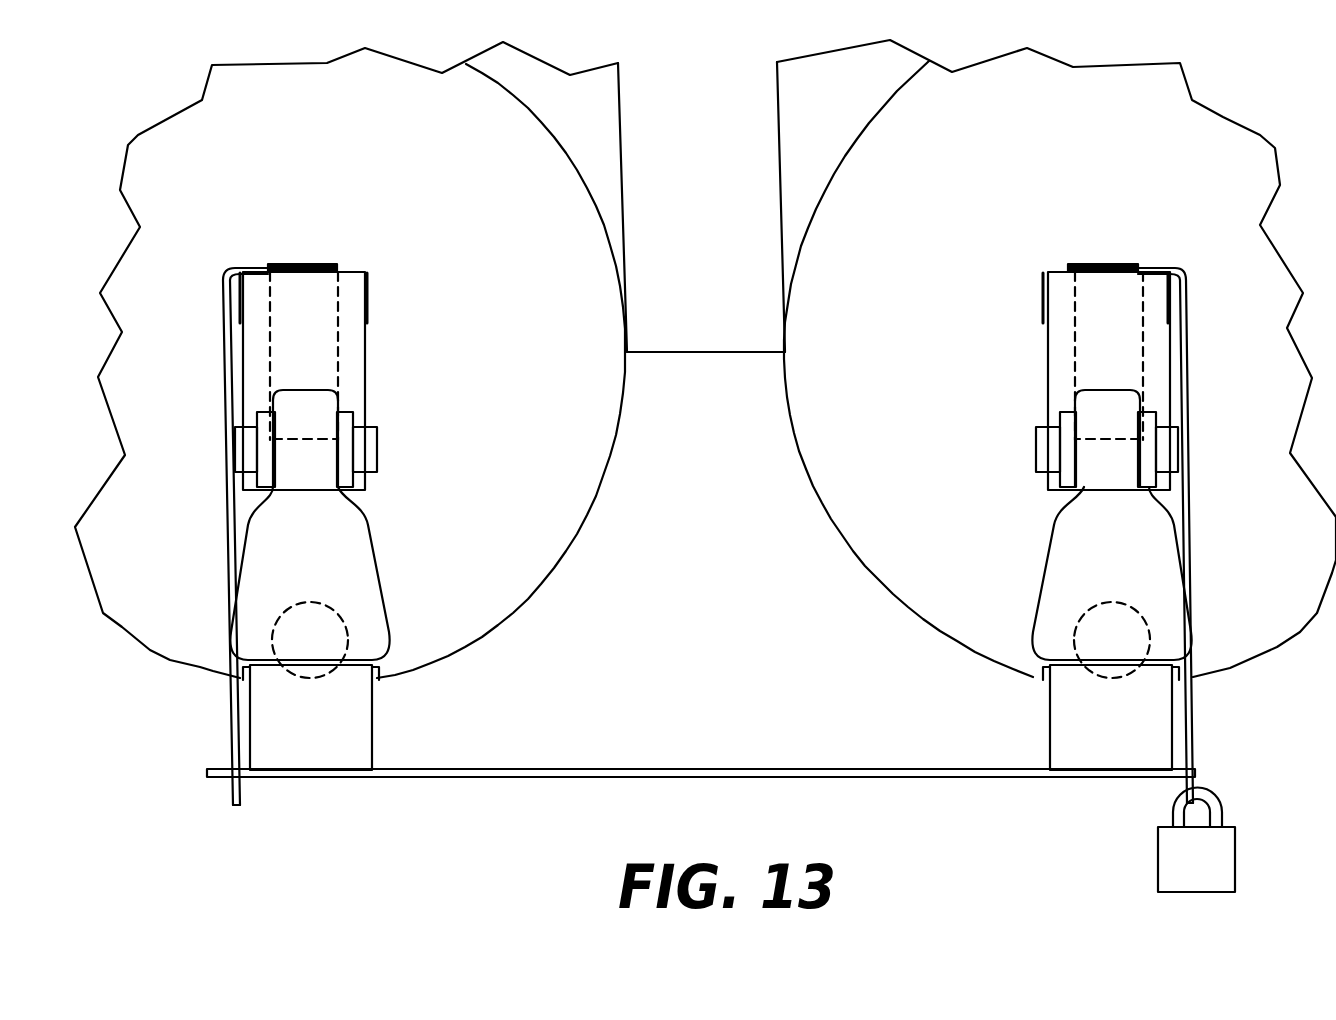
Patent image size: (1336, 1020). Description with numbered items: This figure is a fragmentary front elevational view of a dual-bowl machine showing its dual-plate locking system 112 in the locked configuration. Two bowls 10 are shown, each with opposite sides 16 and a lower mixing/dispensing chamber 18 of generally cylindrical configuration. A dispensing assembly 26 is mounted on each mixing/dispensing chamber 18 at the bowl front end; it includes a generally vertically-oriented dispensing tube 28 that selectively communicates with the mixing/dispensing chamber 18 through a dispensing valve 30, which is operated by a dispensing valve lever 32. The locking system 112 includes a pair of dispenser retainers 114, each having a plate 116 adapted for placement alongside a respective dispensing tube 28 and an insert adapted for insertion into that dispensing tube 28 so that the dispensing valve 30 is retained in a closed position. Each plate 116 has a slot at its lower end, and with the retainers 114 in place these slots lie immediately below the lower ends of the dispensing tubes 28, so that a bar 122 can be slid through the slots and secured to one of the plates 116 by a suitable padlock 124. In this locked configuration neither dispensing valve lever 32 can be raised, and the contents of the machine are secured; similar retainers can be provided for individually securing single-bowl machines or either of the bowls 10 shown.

The bowl 10 is at (238, 200).
The side 16 is at (778, 96).
The mixing/dispensing chamber 18 is at (503, 527).
The dispensing assembly 26 is at (364, 272).
The dispensing tube 28 is at (366, 374).
The dispensing valve 30 is at (373, 712).
The dispensing valve lever 32 is at (332, 577).
The dual-plate locking system 112 is at (212, 740).
The dispenser retainer 114 is at (226, 268).
The plate 116 is at (223, 355).
The bar 122 is at (650, 770).
The padlock 124 is at (1237, 832).